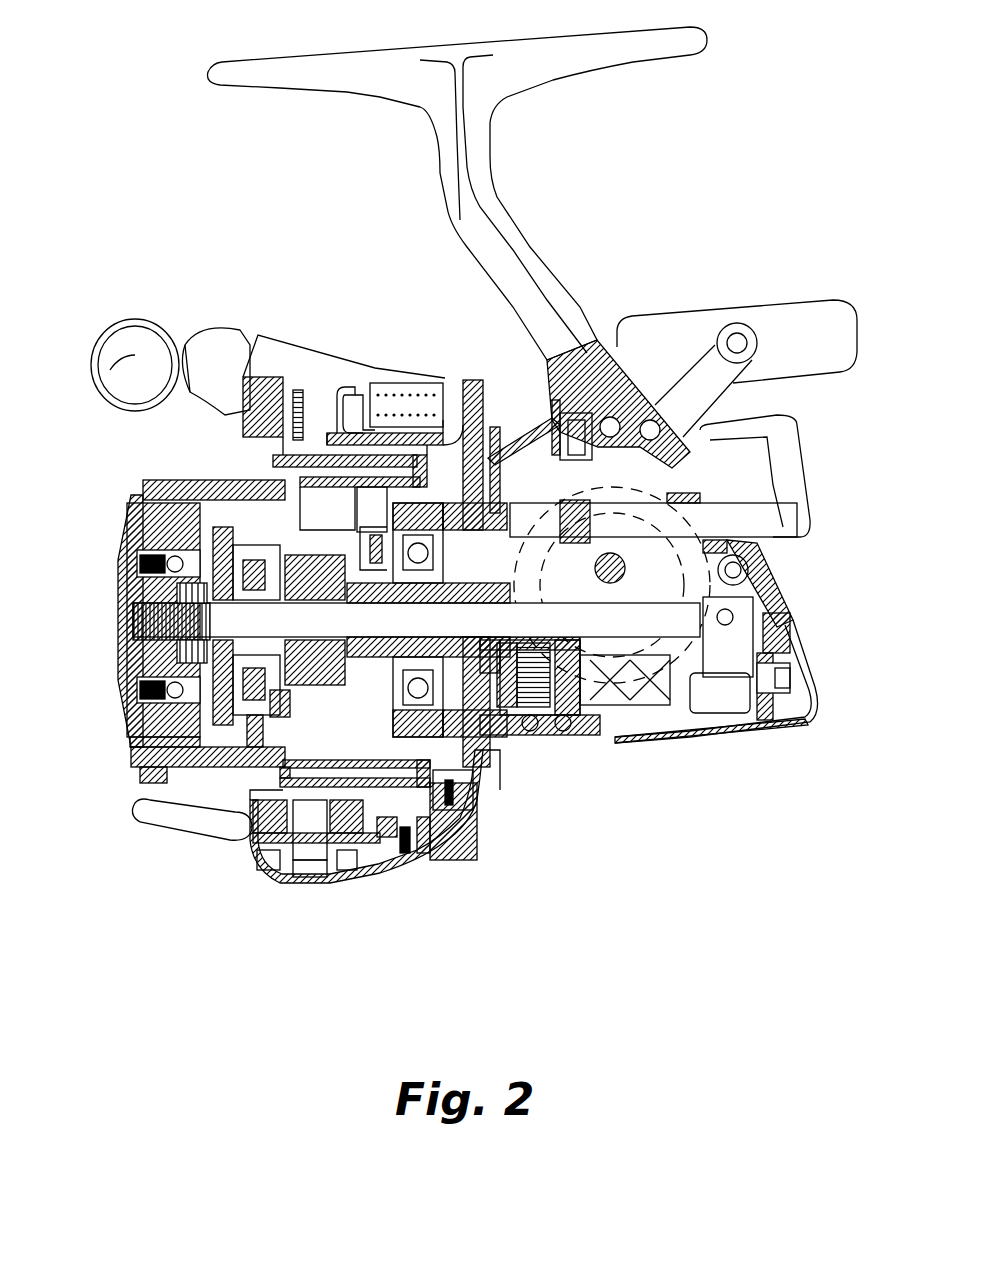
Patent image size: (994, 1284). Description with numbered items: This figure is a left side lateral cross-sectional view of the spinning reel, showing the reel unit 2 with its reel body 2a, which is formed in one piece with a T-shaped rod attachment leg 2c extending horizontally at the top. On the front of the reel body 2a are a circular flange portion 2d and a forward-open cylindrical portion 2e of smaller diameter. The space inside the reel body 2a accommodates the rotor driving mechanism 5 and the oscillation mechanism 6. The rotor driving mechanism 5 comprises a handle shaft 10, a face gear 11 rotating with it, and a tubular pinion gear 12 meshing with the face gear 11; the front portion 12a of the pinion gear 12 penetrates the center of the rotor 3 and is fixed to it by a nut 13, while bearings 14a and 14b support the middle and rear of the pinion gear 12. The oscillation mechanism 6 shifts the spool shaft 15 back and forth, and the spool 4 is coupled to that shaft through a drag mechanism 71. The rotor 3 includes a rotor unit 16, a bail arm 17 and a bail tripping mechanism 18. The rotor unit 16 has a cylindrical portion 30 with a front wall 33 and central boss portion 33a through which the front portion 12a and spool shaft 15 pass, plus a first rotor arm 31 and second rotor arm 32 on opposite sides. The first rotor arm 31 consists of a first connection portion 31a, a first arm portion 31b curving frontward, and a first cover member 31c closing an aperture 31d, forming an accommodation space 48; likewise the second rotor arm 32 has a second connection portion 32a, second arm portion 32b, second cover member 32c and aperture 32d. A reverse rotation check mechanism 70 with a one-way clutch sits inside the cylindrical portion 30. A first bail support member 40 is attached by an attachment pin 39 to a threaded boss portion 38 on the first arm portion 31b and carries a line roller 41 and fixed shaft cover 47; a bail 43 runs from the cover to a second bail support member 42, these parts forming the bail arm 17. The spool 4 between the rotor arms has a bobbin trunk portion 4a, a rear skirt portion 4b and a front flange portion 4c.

The reel unit 2 is at (793, 618).
The reel body 2a is at (795, 607).
The rod attachment leg 2c is at (640, 48).
The flange portion 2d is at (505, 812).
The cylindrical portion 2e is at (452, 420).
The rotor 3 is at (497, 773).
The spool 4 is at (185, 487).
The bobbin trunk portion 4a is at (208, 487).
The skirt portion 4b is at (282, 887).
The flange portion 4c is at (148, 487).
The rotor driving mechanism 5 is at (650, 518).
The oscillation mechanism 6 is at (620, 745).
The handle shaft 10 is at (597, 745).
The face gear 11 is at (688, 745).
The pinion gear 12 is at (530, 740).
The front portion of the pinion gear 12a is at (310, 677).
The nut 13 is at (315, 668).
The bearing 14a is at (508, 767).
The bearing 14b is at (563, 745).
The spool shaft 15 is at (130, 723).
The rotor unit 16 is at (365, 410).
The bail arm 17 is at (118, 430).
The bail tripping mechanism 18 is at (337, 345).
The cylindrical portion 30 is at (307, 488).
The first rotor arm 31 is at (275, 460).
The first connection portion 31a is at (413, 340).
The first arm portion 31b is at (287, 335).
The first cover member 31c is at (428, 380).
The aperture 31d is at (330, 335).
The second rotor arm 32 is at (433, 812).
The second connection portion 32a is at (448, 853).
The second arm portion 32b is at (317, 880).
The second cover member 32c is at (368, 877).
The aperture 32d is at (265, 880).
The front wall 33 is at (355, 488).
The boss portion 33a is at (362, 545).
The threaded boss portion 38 is at (243, 400).
The attachment pin 39 is at (270, 335).
The first bail support member 40 is at (200, 335).
The line roller 41 is at (98, 335).
The second bail support member 42 is at (243, 840).
The bail 43 is at (182, 335).
The fixed shaft cover 47 is at (120, 378).
The accommodation space 48 is at (325, 345).
The reverse rotation check mechanism 70 is at (392, 738).
The drag mechanism 71 is at (185, 805).